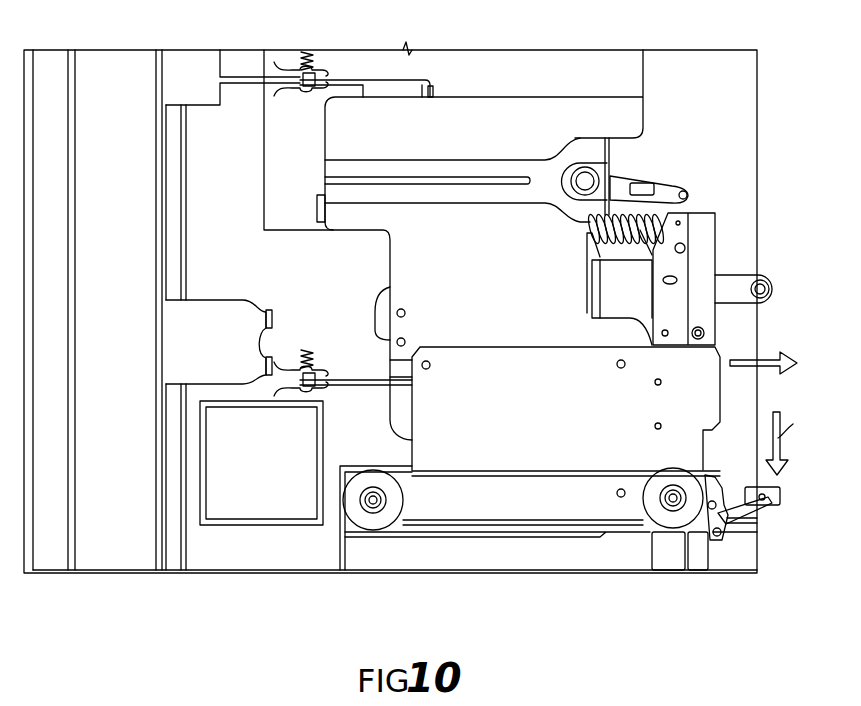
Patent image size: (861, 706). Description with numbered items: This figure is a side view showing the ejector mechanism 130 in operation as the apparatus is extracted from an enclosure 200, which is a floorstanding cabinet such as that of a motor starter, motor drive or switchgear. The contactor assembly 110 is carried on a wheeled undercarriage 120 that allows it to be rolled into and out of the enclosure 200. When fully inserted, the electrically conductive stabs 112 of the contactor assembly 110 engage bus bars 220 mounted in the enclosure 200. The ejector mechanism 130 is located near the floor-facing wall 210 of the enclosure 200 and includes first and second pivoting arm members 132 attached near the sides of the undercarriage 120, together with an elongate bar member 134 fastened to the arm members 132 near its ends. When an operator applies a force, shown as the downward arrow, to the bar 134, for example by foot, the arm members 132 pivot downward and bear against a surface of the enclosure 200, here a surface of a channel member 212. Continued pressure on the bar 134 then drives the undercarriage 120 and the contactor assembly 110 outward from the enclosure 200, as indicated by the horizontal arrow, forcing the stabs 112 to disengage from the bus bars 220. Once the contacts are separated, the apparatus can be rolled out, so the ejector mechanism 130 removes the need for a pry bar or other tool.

The contactor assembly 110 is at (545, 113).
The stabs 112 is at (322, 72).
The wheeled undercarriage 120 is at (497, 508).
The ejector mechanism 130 is at (781, 454).
The pivoting arm members 132 is at (757, 518).
The bar member 134 is at (785, 492).
The enclosure 200 is at (52, 570).
The floor-facing wall 210 is at (573, 565).
The channel member 212 is at (712, 557).
The bus bars 220 is at (245, 75).